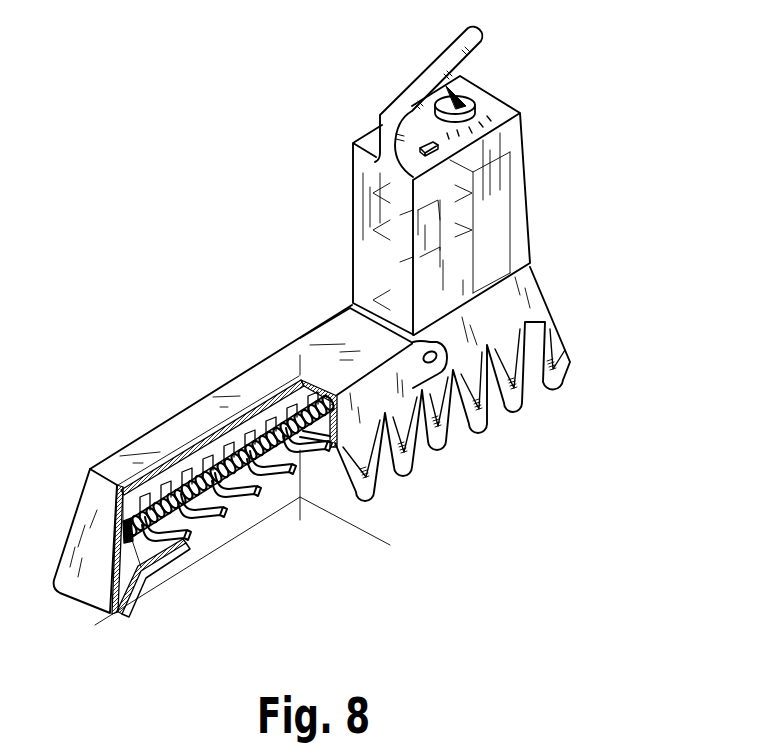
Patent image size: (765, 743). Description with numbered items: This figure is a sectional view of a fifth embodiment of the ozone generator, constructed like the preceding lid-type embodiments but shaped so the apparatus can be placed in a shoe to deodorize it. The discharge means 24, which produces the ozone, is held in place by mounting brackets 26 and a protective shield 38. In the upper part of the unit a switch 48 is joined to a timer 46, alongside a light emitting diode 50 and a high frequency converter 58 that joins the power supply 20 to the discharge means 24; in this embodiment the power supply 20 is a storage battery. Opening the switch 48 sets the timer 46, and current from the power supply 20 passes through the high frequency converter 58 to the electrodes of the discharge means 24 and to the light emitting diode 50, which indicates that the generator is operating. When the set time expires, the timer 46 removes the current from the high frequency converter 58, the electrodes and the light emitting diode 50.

The power supply 20 is at (502, 213).
The discharge means 24 is at (153, 502).
The mounting brackets 26 is at (127, 562).
The protective shield 38 is at (273, 480).
The timer 46 is at (376, 221).
The switch 48 is at (480, 100).
The light emitting diode 50 is at (441, 148).
The high frequency converter 58 is at (393, 274).